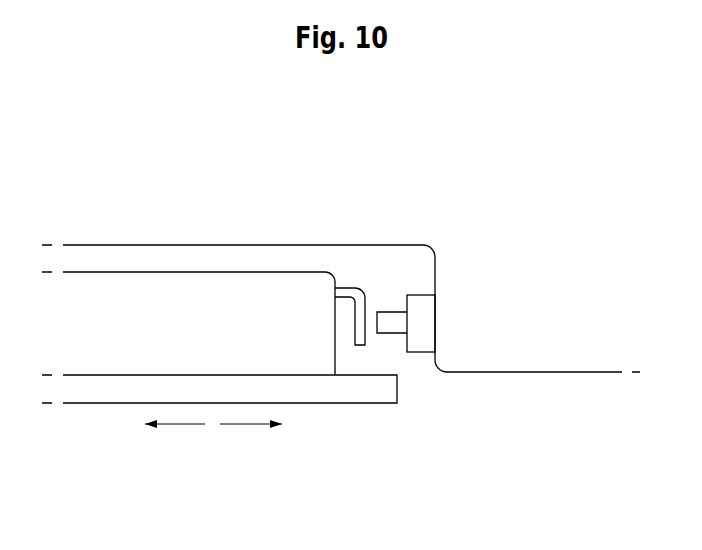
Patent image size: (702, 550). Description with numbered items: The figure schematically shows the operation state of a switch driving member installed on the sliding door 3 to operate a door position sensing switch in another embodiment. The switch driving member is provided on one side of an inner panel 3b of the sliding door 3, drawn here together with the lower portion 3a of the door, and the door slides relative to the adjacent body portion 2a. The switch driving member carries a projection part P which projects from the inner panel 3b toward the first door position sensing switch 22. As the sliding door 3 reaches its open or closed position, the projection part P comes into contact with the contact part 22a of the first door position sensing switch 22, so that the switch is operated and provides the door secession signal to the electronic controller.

The sliding door 3 is at (213, 349).
The bottom plate of the drawer 3a is at (320, 403).
The inner panel 3b is at (182, 290).
The projection part P is at (362, 312).
The first door position sensing switch 22 is at (420, 345).
The contact part 22a is at (393, 322).
The housing wall 2a is at (544, 363).